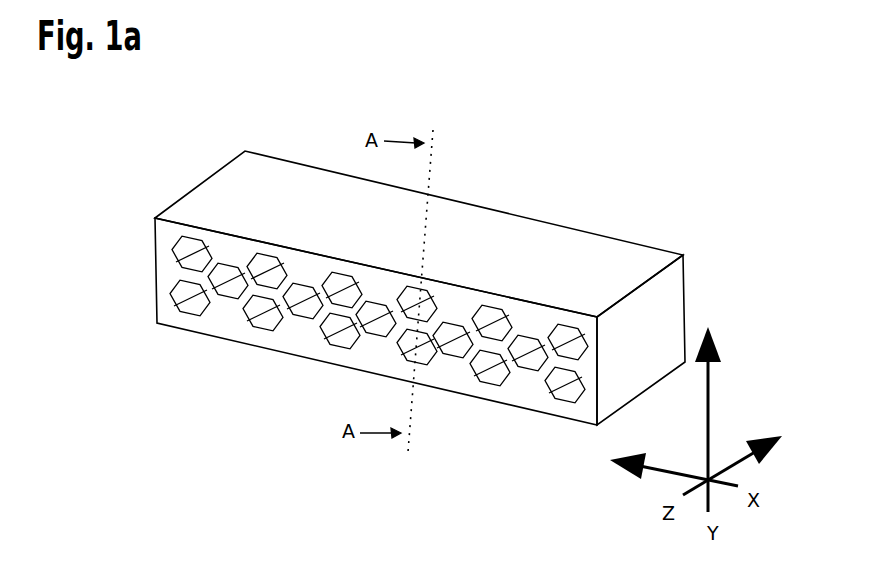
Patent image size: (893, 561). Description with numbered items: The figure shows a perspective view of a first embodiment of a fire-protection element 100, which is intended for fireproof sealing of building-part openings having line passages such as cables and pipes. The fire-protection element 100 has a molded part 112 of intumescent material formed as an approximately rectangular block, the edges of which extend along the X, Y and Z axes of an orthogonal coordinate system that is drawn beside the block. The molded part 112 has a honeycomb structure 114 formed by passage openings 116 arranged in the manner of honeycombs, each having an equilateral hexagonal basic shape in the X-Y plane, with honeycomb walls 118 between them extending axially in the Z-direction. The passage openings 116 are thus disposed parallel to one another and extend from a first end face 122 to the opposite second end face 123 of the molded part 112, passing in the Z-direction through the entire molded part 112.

The fire-protection element 100 is at (420, 257).
The molded part 112 is at (290, 200).
The honeycomb structure 114 is at (221, 315).
The passage openings 116 is at (265, 325).
The honeycomb walls 118 is at (482, 368).
The first end face 122 is at (528, 393).
The second end face 123 is at (625, 239).